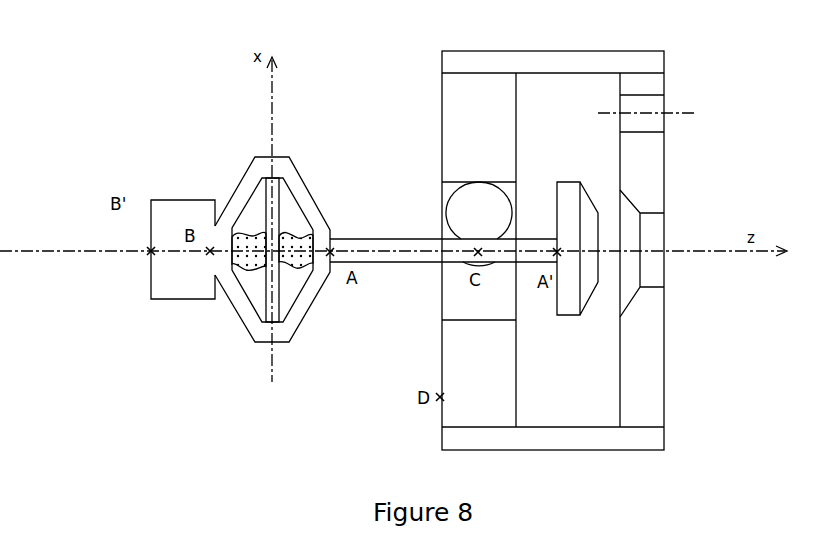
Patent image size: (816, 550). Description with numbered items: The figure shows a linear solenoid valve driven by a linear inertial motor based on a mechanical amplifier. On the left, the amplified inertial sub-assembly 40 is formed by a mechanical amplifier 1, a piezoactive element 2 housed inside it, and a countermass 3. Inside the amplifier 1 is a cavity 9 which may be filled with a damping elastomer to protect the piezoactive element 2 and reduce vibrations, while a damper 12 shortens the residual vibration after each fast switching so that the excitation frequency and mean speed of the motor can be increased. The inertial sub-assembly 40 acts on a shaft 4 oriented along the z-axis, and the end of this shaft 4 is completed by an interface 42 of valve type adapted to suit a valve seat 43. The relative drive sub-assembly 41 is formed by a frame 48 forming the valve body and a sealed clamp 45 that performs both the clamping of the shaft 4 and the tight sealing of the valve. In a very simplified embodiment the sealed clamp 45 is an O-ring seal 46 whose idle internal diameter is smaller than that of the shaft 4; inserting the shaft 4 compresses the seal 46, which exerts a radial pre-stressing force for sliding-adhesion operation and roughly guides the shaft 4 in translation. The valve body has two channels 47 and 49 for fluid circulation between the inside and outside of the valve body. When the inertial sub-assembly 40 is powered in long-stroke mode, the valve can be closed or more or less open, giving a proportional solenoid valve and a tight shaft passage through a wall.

The mechanical amplifier 1 is at (255, 156).
The piezoactive element 2 is at (263, 294).
The countermass 3 is at (170, 192).
The shaft 4 is at (375, 238).
The cavity 9 is at (293, 275).
The damper 12 is at (289, 228).
The amplified inertial sub-assembly 40 is at (228, 213).
The relative drive sub-assembly 41 is at (528, 235).
The interface 42 is at (558, 183).
The valve seat 43 is at (620, 190).
The sealed clamp 45 is at (431, 250).
The O-ring seal 46 is at (447, 190).
The channel 47 is at (664, 234).
The frame 48 is at (437, 113).
The channel 49 is at (674, 97).